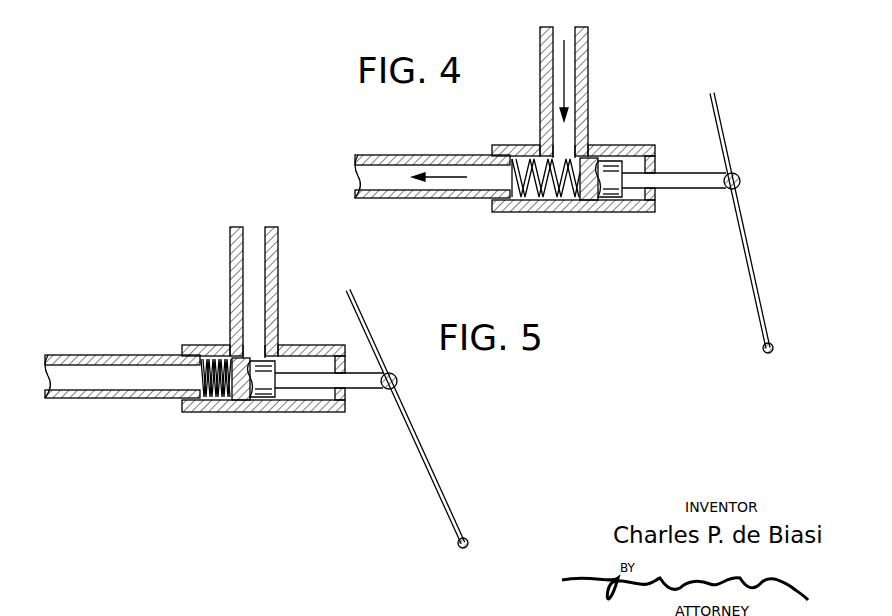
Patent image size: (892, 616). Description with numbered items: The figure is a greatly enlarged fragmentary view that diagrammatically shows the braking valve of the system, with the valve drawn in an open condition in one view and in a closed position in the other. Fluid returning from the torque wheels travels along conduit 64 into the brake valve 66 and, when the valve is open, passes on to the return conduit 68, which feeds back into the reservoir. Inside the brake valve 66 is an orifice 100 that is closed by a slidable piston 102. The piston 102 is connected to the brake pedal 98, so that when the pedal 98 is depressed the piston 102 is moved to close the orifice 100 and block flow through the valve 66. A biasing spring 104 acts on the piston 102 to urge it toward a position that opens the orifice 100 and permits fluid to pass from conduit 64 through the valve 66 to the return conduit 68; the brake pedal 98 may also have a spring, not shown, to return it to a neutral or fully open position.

In FIG. 4, the conduit 64 is at (588, 82).
In FIG. 5, the conduit 64 is at (274, 291).
In FIG. 4, the brake valve arrangement 66 is at (581, 212).
In FIG. 5, the brake valve arrangement 66 is at (263, 396).
In FIG. 4, the return conduit 68 is at (442, 202).
In FIG. 5, the return conduit 68 is at (122, 393).
In FIG. 4, the brake pedal 98 is at (724, 135).
In FIG. 5, the brake pedal 98 is at (407, 418).
In FIG. 4, the orifice 100 is at (572, 148).
In FIG. 5, the orifice 100 is at (225, 335).
In FIG. 4, the slidable piston 102 is at (614, 172).
In FIG. 5, the slidable piston 102 is at (314, 359).
In FIG. 4, the biasing spring 104 is at (542, 211).
In FIG. 5, the biasing spring 104 is at (215, 402).